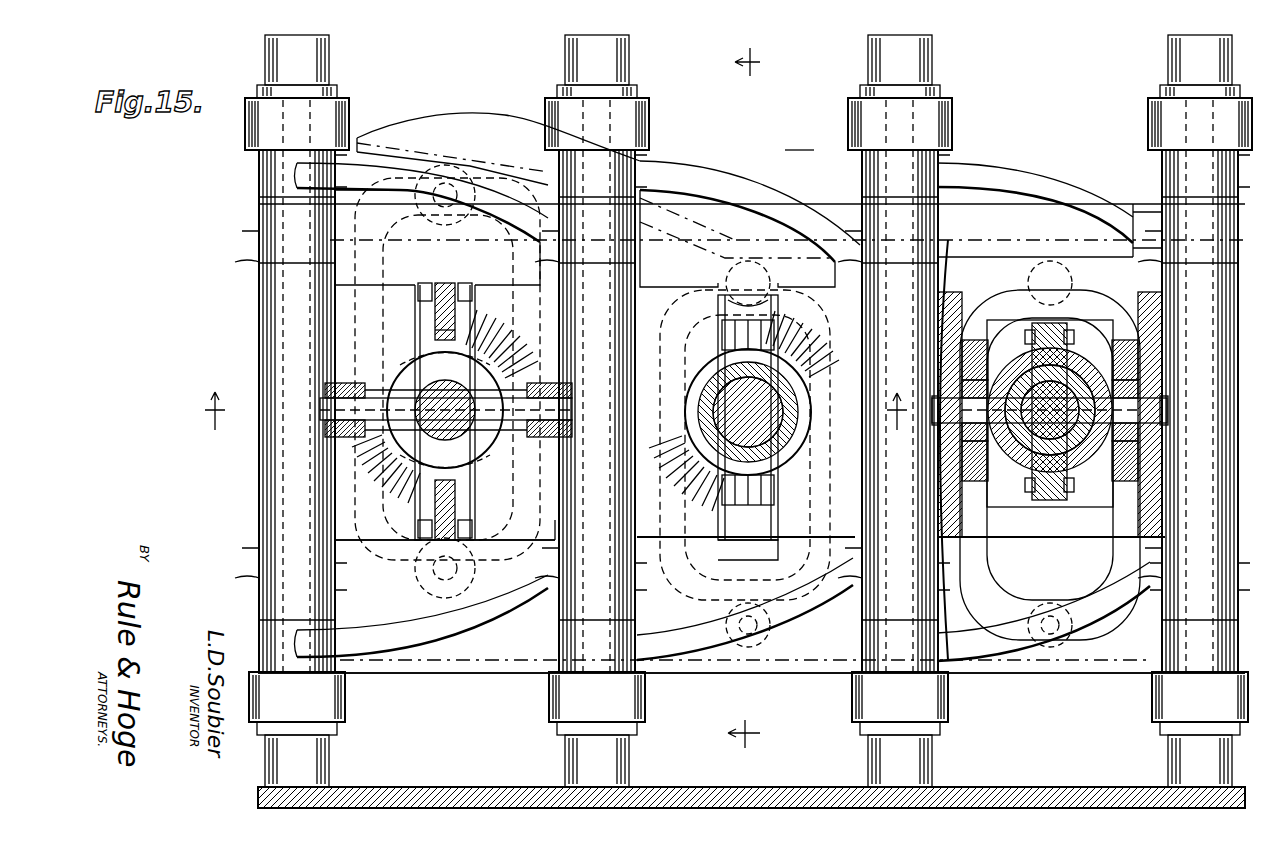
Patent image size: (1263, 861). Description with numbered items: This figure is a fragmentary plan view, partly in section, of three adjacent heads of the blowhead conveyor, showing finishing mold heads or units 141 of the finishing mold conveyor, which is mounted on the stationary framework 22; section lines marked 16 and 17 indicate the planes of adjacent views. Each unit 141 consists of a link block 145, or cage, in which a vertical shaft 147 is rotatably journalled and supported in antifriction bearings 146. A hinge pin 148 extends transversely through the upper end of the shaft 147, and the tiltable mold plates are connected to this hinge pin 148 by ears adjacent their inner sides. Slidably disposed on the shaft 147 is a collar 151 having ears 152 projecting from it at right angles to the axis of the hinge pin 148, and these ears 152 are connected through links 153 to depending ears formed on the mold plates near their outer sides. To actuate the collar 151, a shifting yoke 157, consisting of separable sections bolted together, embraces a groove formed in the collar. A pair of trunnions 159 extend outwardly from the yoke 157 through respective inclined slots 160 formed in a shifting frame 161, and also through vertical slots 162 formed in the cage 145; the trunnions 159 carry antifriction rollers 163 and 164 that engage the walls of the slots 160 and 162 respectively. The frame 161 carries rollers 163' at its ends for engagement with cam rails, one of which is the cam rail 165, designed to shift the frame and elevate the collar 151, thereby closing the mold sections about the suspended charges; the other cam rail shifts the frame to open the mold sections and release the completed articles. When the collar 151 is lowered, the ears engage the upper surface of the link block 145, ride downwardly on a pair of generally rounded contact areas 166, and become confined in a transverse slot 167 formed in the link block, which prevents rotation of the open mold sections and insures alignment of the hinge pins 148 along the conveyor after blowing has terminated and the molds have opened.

The finishing mold head or unit 141 is at (799, 142).
The link block 145 is at (542, 525).
The antifriction bearings 146 is at (462, 536).
The vertical shaft 147 is at (465, 382).
The hinge pin 148 is at (565, 406).
The collar 151 is at (470, 440).
The ears 152 is at (428, 334).
The links 153 is at (447, 283).
The shifting yoke 157 is at (760, 490).
The trunnions 159 is at (1140, 420).
The inclined slots 160 is at (1130, 435).
The shifting frame 161 is at (368, 230).
The vertical slots 162 is at (1150, 402).
The antifriction rollers 163 is at (1087, 367).
The rollers 163' is at (766, 414).
The antifriction rollers 164 is at (1150, 412).
The cam rail 165 is at (460, 126).
The rounded contact areas 166 is at (408, 496).
The transverse slot 167 is at (776, 526).
The stationary framework 22 is at (462, 682).
The section line 16 is at (546, 418).
The section line 17 is at (758, 398).